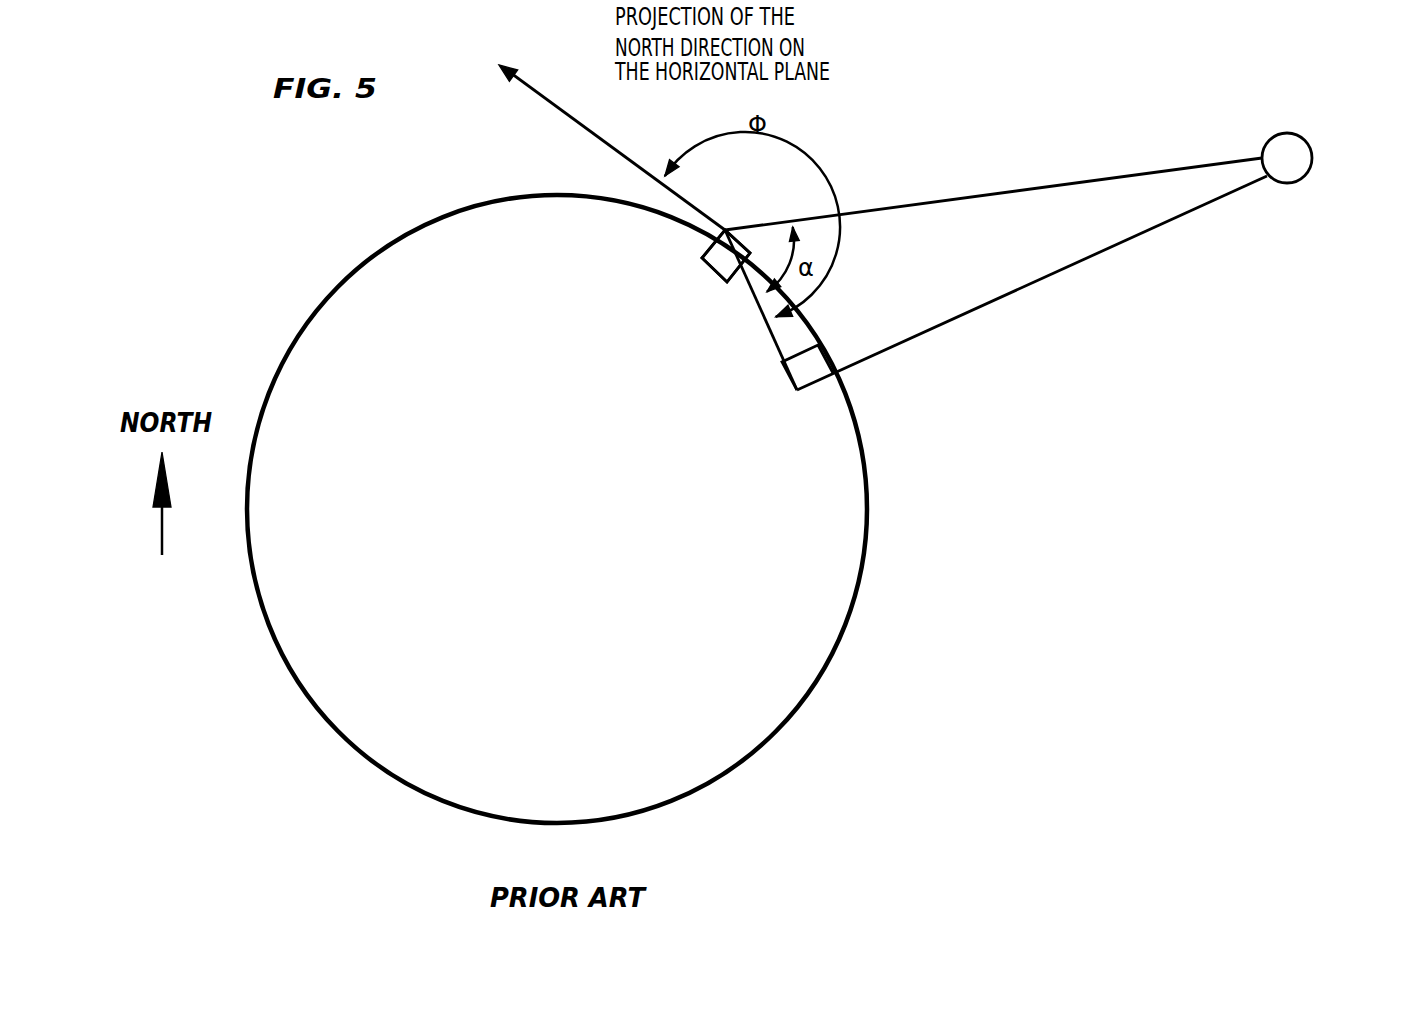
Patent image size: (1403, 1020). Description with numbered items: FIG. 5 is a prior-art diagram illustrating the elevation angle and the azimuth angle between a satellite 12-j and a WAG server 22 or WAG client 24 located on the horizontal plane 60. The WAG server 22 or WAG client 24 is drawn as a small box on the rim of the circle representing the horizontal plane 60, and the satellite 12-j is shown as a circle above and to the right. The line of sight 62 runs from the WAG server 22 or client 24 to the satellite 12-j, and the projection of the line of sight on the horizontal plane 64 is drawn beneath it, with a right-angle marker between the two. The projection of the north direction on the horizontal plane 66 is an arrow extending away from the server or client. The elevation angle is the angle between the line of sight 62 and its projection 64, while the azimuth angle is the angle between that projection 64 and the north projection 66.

The horizontal plane / earth circle 60 is at (344, 178).
The projection of the north direction on the horizontal plane 66 is at (535, 92).
The line of sight 62 is at (985, 195).
The projection of the line of sight on the horizontal plane 64 is at (757, 340).
The WAG server 22 is at (702, 265).
The WAG client 24 is at (702, 265).
The satellite 12-j is at (1305, 140).